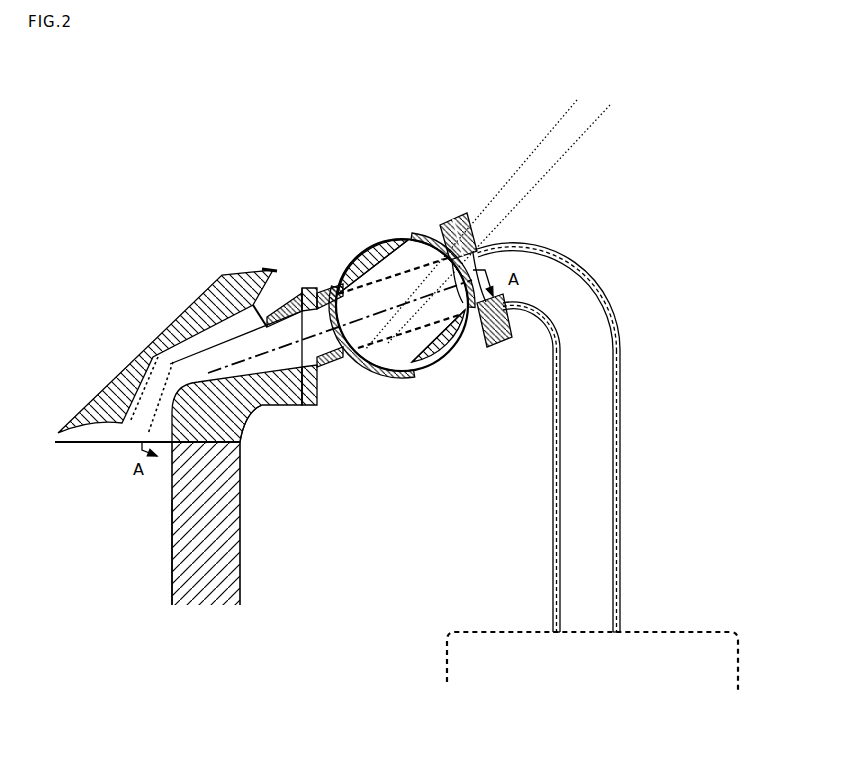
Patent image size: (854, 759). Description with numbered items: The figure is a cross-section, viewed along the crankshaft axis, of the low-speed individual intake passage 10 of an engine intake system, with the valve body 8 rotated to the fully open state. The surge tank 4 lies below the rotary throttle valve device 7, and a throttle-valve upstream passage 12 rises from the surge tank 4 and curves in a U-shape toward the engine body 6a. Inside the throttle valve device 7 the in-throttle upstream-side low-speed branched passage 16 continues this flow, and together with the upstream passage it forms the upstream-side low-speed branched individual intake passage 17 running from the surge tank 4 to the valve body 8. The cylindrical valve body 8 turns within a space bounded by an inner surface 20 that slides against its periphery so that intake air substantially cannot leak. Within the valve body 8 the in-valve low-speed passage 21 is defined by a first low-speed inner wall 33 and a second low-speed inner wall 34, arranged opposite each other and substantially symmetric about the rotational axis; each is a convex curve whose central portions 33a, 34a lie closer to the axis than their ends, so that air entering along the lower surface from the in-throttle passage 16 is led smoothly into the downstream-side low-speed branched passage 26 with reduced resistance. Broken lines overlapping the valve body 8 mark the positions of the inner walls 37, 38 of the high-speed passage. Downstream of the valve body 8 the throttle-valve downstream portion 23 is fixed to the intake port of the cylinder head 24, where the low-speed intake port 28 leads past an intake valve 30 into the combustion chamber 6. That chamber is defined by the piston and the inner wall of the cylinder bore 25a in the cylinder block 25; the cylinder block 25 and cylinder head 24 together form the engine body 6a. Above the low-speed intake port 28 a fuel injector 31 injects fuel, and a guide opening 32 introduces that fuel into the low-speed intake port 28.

The surge tank 4 is at (492, 630).
The combustion chamber 6 is at (113, 487).
The engine body 6a is at (264, 598).
The throttle valve device 7 is at (387, 239).
The valve body 8 is at (430, 367).
The low-speed individual intake passage 10 is at (590, 518).
The throttle-valve upstream passage 12 is at (587, 413).
The in-throttle upstream-side low-speed branched passage 16 is at (518, 244).
The upstream-side low-speed branched individual intake passage 17 is at (565, 297).
The inner surface 20 is at (477, 270).
The in-valve low-speed passage 21 is at (373, 295).
The throttle-valve downstream portion 23 is at (317, 323).
The cylinder head 24 is at (245, 423).
The cylinder block 25 is at (240, 540).
The cylinder bore 25a is at (78, 597).
The downstream-side low-speed branched passage 26 is at (309, 287).
The low-speed intake port 28 is at (202, 382).
The intake valve 30 is at (158, 355).
The fuel injector 31 is at (258, 275).
The guide opening 32 is at (225, 273).
The first low-speed inner wall 33 is at (446, 284).
The central portion of the first low-speed inner wall 33a is at (450, 270).
The second low-speed inner wall 34 is at (366, 283).
The central portion of the second low-speed inner wall 34a is at (380, 272).
The inner wall of the in-valve high-speed passage 37 is at (515, 210).
The inner wall of the in-valve high-speed passage 38 is at (482, 211).